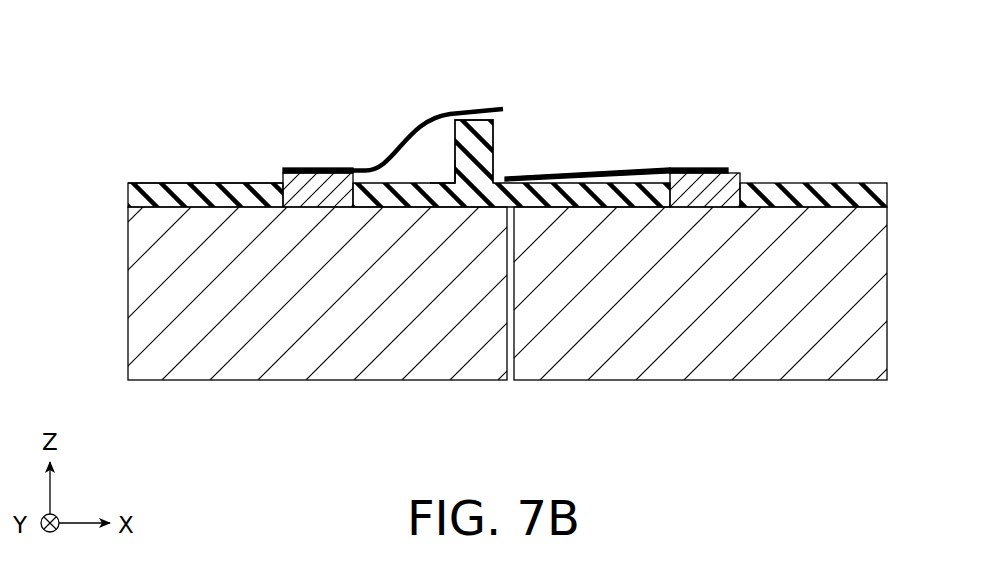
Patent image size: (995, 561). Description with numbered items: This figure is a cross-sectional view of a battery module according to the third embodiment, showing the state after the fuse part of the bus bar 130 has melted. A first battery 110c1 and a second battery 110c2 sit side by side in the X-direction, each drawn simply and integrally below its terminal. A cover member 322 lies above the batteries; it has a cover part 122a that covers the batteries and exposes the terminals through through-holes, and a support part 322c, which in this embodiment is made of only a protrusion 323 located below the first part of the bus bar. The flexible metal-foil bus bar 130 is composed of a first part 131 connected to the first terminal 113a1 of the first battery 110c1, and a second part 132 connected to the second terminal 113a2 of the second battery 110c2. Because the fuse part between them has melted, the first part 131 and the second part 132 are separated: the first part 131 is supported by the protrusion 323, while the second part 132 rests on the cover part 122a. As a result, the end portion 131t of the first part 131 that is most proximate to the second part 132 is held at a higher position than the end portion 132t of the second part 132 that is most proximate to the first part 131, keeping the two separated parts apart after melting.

The first battery 110c1 is at (165, 383).
The second battery 110c2 is at (845, 383).
The cover member 322 is at (460, 293).
The support part 322c is at (445, 160).
The protrusion 323 is at (475, 160).
The cover part 122a is at (158, 184).
The bus bar 130 is at (543, 121).
The first part 131 is at (316, 135).
The end portion of the first part 131t is at (498, 106).
The second part 132 is at (737, 152).
The end portion of the second part 132t is at (512, 180).
The first terminal 113a1 is at (310, 177).
The second terminal 113a2 is at (720, 197).